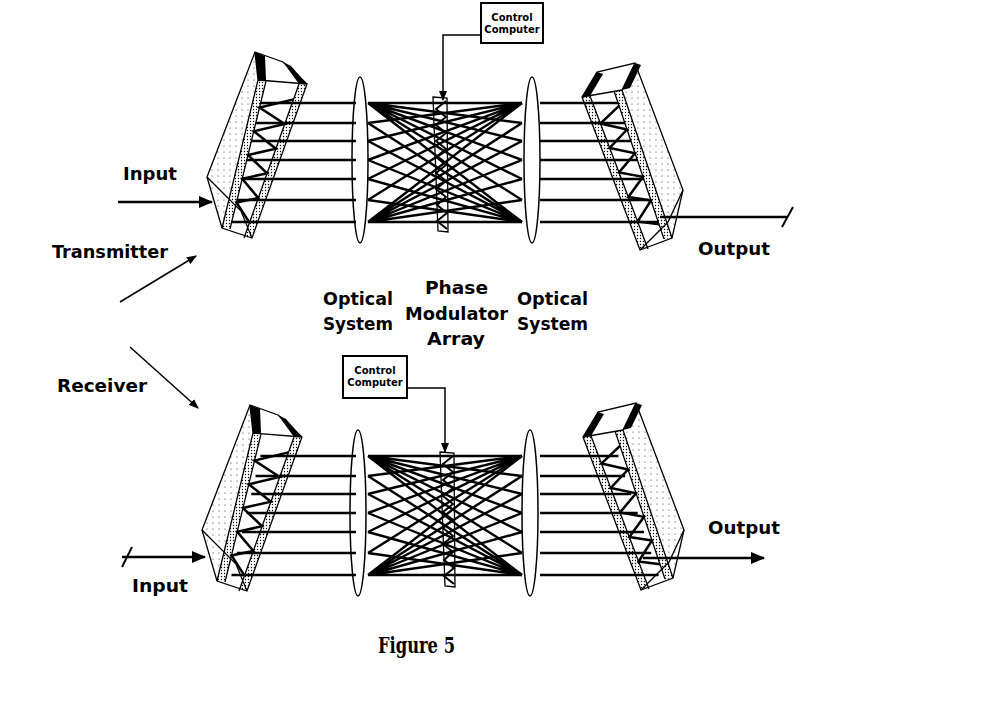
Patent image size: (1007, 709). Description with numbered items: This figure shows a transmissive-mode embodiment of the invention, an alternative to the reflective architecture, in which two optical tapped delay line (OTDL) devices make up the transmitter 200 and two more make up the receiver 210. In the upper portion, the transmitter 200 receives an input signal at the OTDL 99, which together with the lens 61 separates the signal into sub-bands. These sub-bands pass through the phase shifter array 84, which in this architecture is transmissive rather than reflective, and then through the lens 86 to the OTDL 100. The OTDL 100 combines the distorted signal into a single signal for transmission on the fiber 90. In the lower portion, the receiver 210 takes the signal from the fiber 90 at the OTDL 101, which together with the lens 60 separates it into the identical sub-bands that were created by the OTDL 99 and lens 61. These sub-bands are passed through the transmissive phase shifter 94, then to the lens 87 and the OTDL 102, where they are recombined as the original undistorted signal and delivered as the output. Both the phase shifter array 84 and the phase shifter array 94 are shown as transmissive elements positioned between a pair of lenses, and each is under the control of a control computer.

The OTDL 99 is at (254, 52).
The lens 60 is at (360, 78).
The lens 86 is at (533, 80).
The phase shifter array 84 is at (447, 232).
The OTDL 100 is at (635, 63).
The fiber 90 is at (765, 216).
The transmitter 200 is at (136, 284).
The receiver 210 is at (135, 371).
The OTDL 101 is at (247, 405).
The lens 61 is at (358, 431).
The lens 87 is at (532, 431).
The phase shifter array 94 is at (452, 588).
The OTDL 102 is at (637, 403).